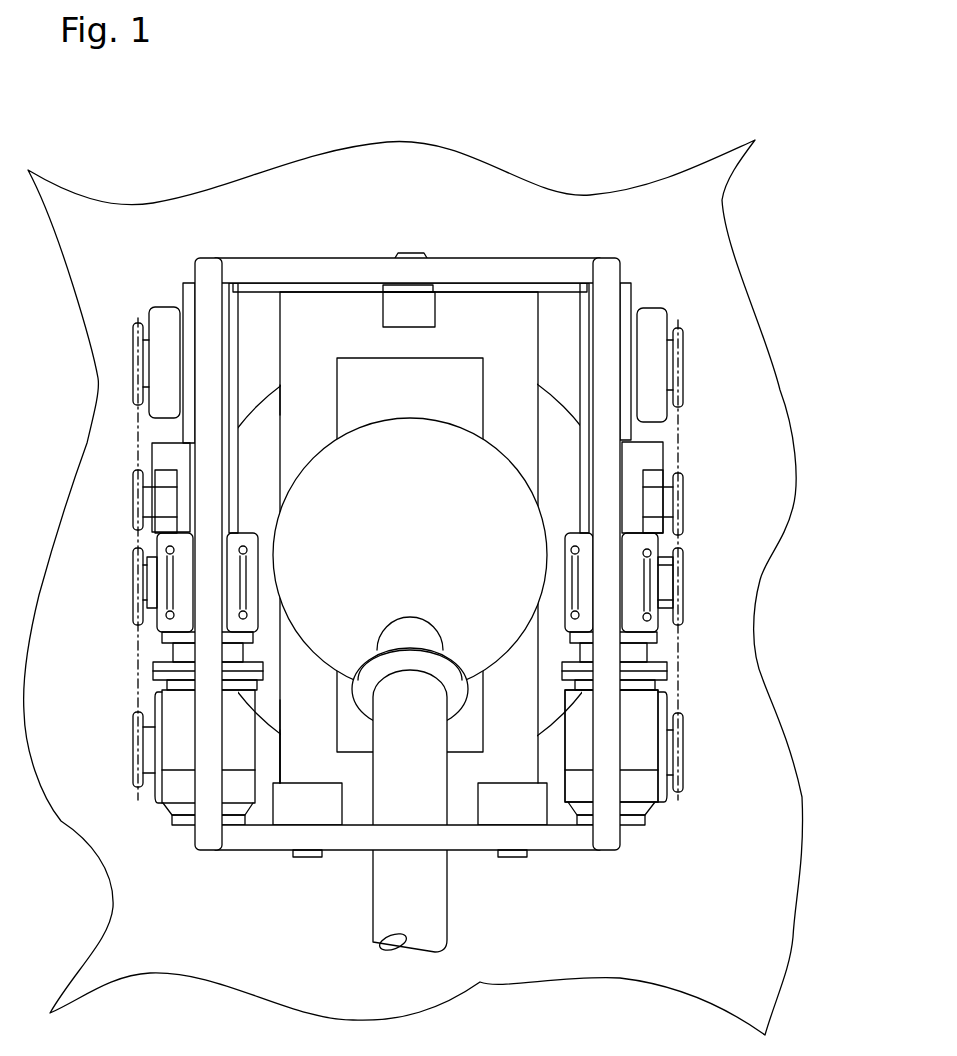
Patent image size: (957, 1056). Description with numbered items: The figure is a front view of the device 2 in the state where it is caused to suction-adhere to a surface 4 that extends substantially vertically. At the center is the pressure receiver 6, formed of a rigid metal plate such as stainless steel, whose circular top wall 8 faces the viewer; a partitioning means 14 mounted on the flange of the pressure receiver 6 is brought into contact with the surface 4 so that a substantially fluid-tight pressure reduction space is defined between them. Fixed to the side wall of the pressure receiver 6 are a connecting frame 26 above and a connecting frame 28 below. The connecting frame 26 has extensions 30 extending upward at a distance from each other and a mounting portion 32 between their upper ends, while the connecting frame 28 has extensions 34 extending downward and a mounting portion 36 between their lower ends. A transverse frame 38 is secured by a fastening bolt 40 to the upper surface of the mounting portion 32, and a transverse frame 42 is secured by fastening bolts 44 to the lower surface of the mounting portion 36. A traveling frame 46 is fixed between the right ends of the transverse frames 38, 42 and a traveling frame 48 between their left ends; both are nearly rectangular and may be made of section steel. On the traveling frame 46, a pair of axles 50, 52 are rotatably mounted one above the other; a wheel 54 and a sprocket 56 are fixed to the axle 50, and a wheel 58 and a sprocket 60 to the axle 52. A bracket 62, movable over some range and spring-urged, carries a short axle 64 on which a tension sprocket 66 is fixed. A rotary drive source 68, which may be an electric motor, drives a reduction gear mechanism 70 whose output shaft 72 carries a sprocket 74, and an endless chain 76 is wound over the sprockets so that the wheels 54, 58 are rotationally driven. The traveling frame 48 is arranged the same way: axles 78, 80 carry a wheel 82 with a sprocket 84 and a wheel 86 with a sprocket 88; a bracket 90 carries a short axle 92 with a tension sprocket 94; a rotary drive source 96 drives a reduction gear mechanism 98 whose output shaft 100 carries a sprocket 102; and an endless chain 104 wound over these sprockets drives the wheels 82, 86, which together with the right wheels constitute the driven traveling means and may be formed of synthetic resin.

The device 2 is at (537, 220).
The surface 4 is at (763, 367).
The pressure receiver 6 is at (423, 410).
The top wall 8 is at (380, 430).
The partitioning means 14 is at (553, 380).
The connecting frame 26 is at (308, 283).
The connecting frame 28 is at (274, 758).
The extensions 30 is at (293, 399).
The mounting portion 32 is at (455, 300).
The extensions 34 is at (320, 715).
The mounting portion 36 is at (472, 850).
The transverse frame 38 is at (240, 263).
The fastening bolt 40 is at (408, 252).
The transverse frame 42 is at (337, 843).
The fastening bolts 44 is at (300, 858).
The traveling frame 46 is at (627, 455).
The traveling frame 48 is at (188, 431).
The axle 50 is at (668, 370).
The axle 52 is at (670, 755).
The wheel 54 is at (647, 308).
The sprocket 56 is at (683, 338).
The wheel 58 is at (665, 800).
The sprocket 60 is at (685, 783).
The bracket 62 is at (651, 477).
The short axle 64 is at (668, 505).
The tension sprocket 66 is at (680, 525).
The rotary drive source 68 is at (645, 737).
The reduction gear mechanism 70 is at (562, 580).
The output shaft 72 is at (680, 585).
The sprocket 74 is at (681, 618).
The endless chain 76 is at (680, 413).
The axle 78 is at (133, 354).
The axle 80 is at (150, 760).
The wheel 82 is at (160, 307).
The sprocket 84 is at (130, 372).
The wheel 86 is at (150, 795).
The sprocket 88 is at (133, 738).
The bracket 90 is at (165, 470).
The short axle 92 is at (130, 513).
The tension sprocket 94 is at (130, 497).
The rotary drive source 96 is at (283, 738).
The reduction gear mechanism 98 is at (258, 567).
The output shaft 100 is at (157, 575).
The sprocket 102 is at (130, 612).
The endless chain 104 is at (137, 660).